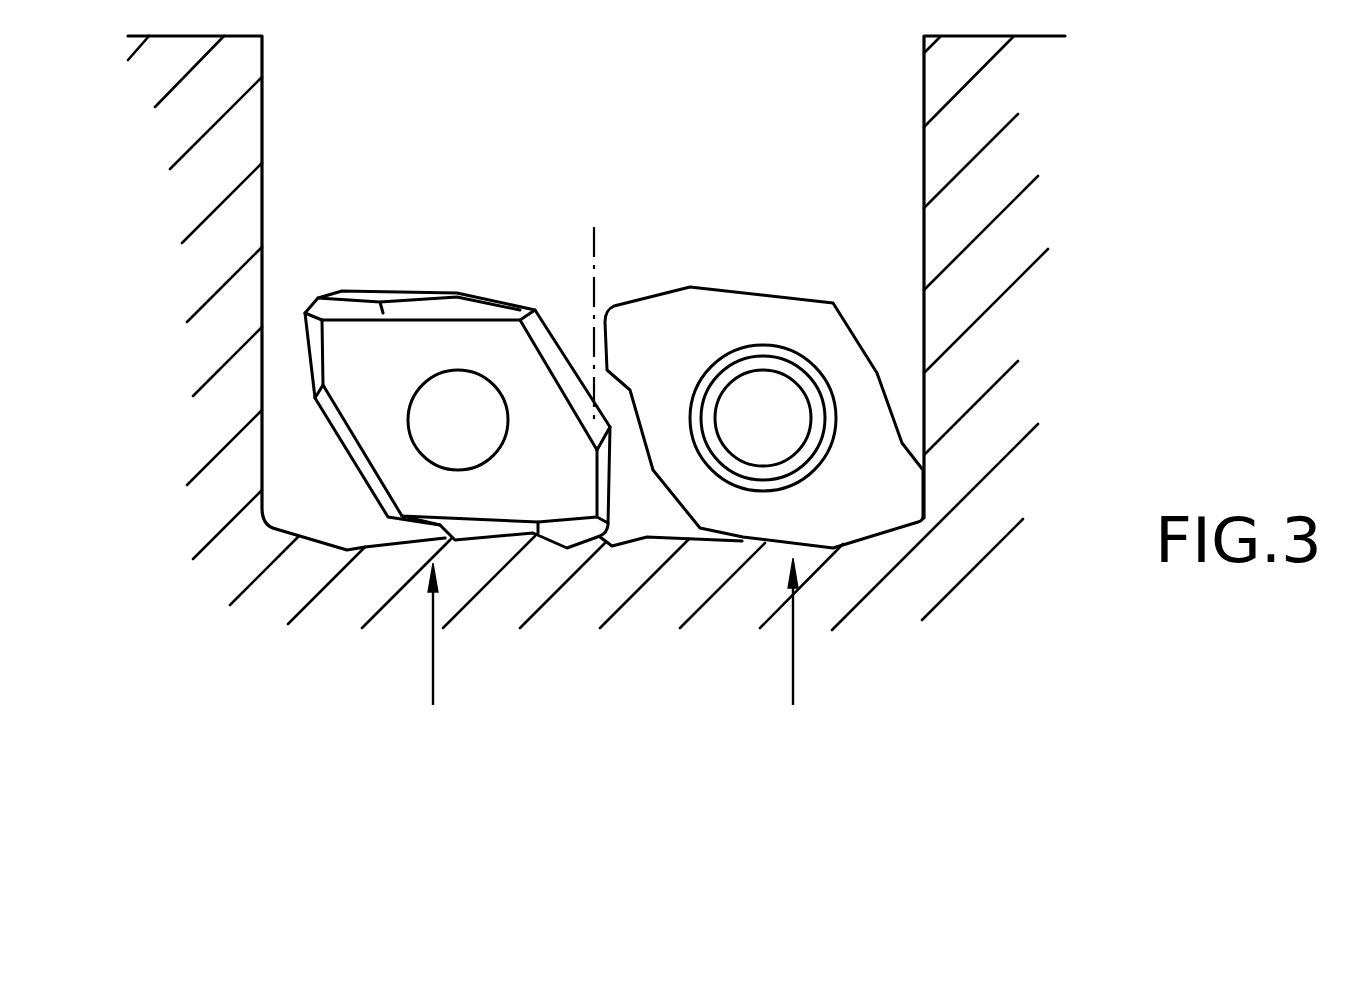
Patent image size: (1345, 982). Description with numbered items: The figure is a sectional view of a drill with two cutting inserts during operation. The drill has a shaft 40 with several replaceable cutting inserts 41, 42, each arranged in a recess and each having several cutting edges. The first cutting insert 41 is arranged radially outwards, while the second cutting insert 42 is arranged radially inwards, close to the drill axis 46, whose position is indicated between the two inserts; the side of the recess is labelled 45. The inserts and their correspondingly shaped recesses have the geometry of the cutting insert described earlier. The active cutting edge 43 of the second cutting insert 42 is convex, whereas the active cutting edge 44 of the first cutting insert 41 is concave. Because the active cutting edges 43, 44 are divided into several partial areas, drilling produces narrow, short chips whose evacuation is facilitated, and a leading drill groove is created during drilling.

The shaft 40 is at (602, 115).
The first cutting insert 41 is at (423, 345).
The second cutting insert 42 is at (767, 317).
The active cutting edge 43 is at (791, 667).
The active cutting edge 44 is at (430, 669).
The pocket side wall 45 is at (923, 178).
The drill axis 46 is at (595, 250).